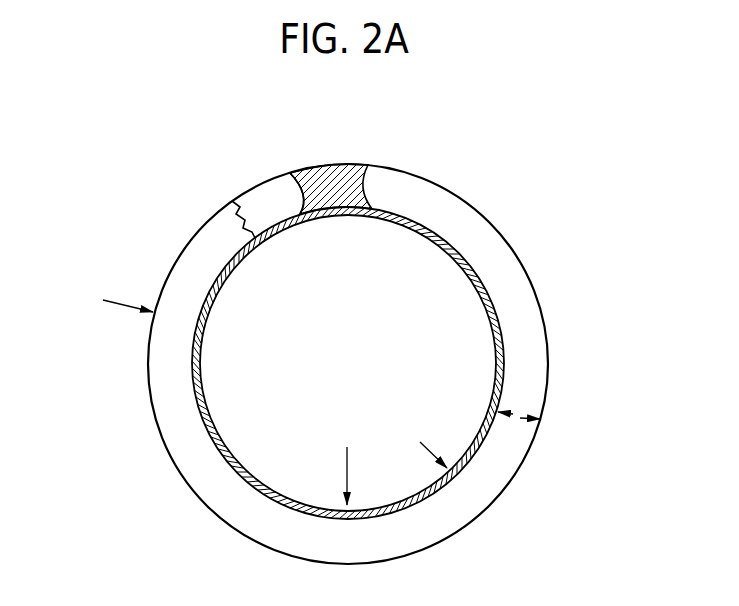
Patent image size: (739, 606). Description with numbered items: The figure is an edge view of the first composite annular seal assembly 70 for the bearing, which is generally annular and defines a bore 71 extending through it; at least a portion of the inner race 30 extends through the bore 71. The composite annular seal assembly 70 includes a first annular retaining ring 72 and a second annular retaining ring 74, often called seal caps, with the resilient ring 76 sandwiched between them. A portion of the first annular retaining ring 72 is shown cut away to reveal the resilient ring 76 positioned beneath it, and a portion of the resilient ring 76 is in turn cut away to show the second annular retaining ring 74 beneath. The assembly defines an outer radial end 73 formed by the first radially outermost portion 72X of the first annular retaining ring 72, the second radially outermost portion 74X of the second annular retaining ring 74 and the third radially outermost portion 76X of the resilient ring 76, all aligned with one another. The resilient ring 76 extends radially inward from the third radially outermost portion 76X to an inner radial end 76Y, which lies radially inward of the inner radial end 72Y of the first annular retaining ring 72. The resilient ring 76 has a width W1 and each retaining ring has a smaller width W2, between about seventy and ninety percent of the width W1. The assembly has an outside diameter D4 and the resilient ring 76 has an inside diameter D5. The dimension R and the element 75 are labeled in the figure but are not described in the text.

The inner race 30 is at (167, 280).
The first composite annular seal assembly 70 is at (115, 323).
The bore 71 is at (352, 382).
The first annular retaining ring 72 is at (200, 267).
The first radially outermost portion 72X is at (420, 173).
The inner radial end 72Y is at (280, 504).
The outer radial end 73 is at (150, 400).
The second annular retaining ring 74 is at (280, 188).
The second radially outermost portion 74X is at (282, 190).
The inner member 75 is at (220, 422).
The resilient ring 76 is at (204, 332).
The third radially outermost portion 76X is at (330, 163).
The inner radial end 76Y is at (245, 467).
The radius R is at (490, 220).
The outside diameter D4 is at (541, 421).
The inside diameter D5 is at (350, 476).
The width W1 is at (482, 512).
The width W2 is at (516, 417).